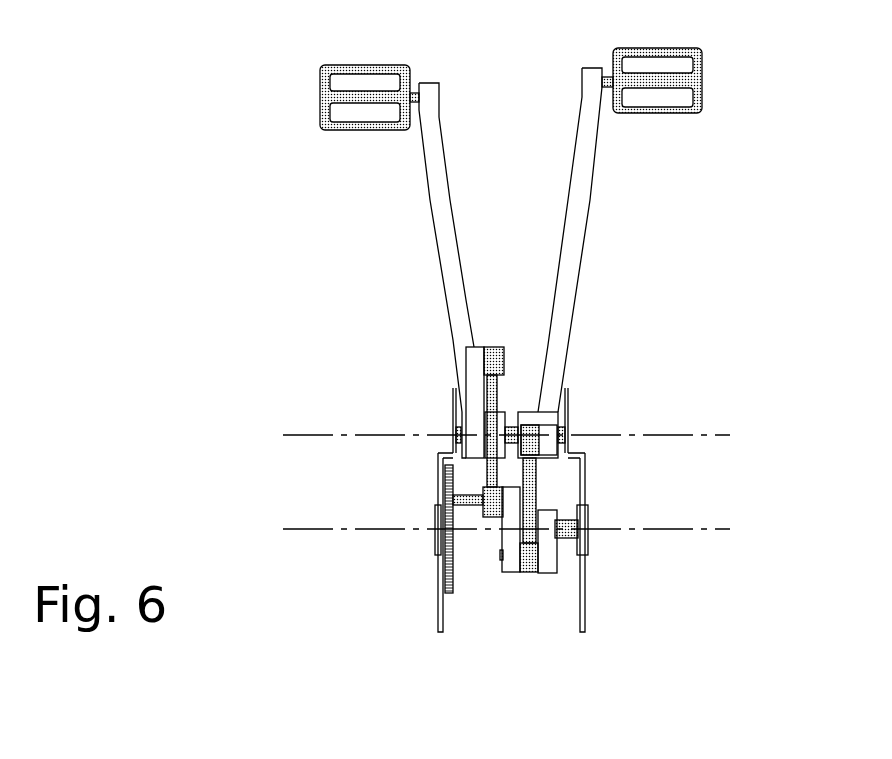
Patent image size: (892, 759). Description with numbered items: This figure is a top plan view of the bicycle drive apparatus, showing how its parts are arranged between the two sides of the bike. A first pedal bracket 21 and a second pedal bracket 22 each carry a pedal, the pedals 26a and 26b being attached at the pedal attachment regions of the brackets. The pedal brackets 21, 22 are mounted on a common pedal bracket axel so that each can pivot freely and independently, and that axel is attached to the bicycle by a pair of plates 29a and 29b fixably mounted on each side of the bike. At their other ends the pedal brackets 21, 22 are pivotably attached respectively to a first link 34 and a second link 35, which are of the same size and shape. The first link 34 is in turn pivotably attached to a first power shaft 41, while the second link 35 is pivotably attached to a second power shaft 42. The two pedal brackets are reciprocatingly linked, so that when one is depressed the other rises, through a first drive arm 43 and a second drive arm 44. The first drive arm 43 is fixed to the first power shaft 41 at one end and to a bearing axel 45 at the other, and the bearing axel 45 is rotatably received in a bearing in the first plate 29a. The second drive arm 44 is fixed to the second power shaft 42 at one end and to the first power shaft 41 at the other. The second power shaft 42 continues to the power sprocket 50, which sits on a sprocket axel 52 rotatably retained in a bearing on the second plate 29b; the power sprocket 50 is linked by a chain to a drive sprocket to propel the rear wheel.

The first pedal bracket 21 is at (576, 258).
The second pedal bracket 22 is at (548, 180).
The pedal 26a is at (702, 50).
The pedal 26b is at (322, 70).
The first plate 29a is at (582, 612).
The second plate 29b is at (437, 623).
The first link 34 is at (540, 488).
The second link 35 is at (495, 403).
The first power shaft 41 is at (502, 560).
The second power shaft 42 is at (475, 507).
The first drive arm 43 is at (552, 548).
The second drive arm 44 is at (515, 548).
The bearing axel 45 is at (568, 530).
The power sprocket 50 is at (448, 496).
The sprocket axel 52 is at (435, 530).